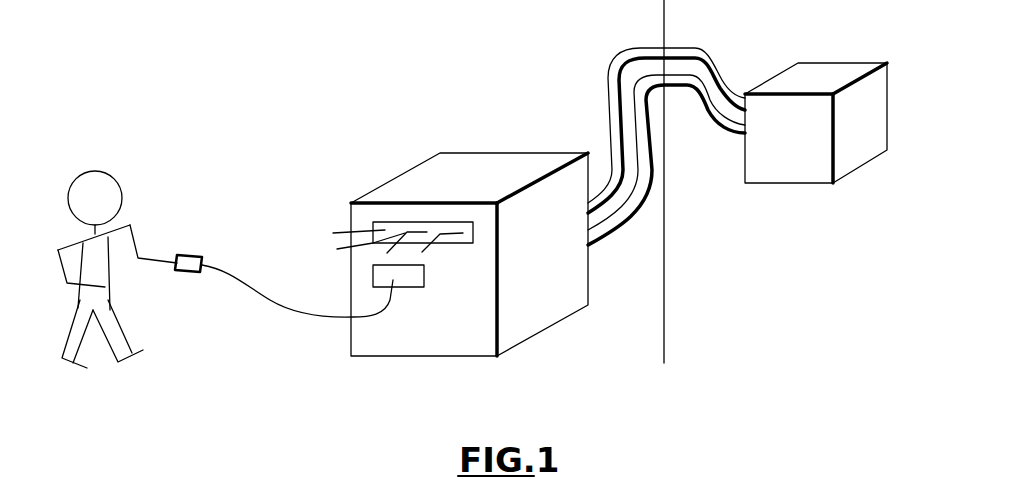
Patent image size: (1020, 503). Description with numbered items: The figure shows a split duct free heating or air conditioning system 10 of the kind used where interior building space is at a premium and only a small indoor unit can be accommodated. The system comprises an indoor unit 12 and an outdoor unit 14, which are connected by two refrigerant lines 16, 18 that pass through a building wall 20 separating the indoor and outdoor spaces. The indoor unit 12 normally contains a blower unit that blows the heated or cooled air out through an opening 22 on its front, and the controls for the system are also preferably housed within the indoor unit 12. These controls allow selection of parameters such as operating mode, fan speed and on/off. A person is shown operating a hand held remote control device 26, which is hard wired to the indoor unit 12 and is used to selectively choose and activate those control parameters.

The split duct free heating or air conditioning system 10 is at (603, 409).
The indoor unit 12 is at (445, 273).
The outdoor unit 14 is at (810, 173).
The refrigerant line 16 is at (610, 106).
The refrigerant line 18 is at (600, 240).
The building wall 20 is at (664, 322).
The opening 22 is at (360, 212).
The hand held remote control device 26 is at (191, 254).